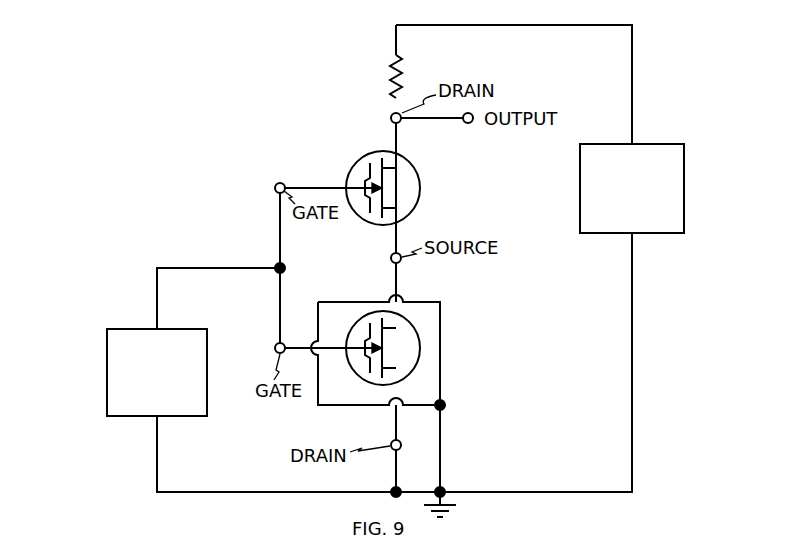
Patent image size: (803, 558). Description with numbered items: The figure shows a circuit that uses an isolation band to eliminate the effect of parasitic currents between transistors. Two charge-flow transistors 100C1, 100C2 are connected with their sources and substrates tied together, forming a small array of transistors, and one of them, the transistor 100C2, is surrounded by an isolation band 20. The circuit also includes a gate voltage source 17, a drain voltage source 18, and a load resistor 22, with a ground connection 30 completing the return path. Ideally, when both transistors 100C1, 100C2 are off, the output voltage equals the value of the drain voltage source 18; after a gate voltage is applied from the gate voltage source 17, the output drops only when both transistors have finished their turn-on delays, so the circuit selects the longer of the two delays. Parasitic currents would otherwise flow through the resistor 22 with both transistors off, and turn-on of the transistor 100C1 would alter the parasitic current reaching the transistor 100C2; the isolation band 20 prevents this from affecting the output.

The gate voltage source 17 is at (107, 409).
The drain voltage source 18 is at (686, 204).
The isolation band 20 is at (441, 345).
The load resistor 22 is at (404, 74).
The ground 30 is at (455, 510).
The charge-flow transistor 100C1 is at (352, 170).
The charge-flow transistor 100C2 is at (415, 368).